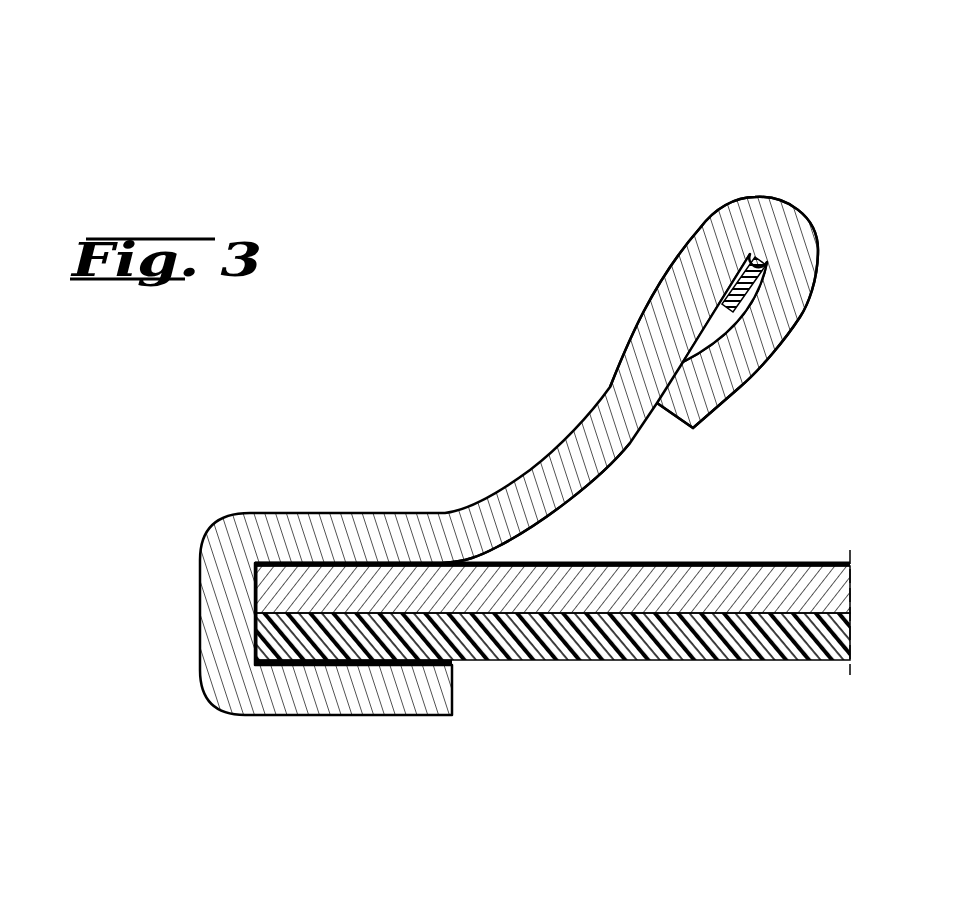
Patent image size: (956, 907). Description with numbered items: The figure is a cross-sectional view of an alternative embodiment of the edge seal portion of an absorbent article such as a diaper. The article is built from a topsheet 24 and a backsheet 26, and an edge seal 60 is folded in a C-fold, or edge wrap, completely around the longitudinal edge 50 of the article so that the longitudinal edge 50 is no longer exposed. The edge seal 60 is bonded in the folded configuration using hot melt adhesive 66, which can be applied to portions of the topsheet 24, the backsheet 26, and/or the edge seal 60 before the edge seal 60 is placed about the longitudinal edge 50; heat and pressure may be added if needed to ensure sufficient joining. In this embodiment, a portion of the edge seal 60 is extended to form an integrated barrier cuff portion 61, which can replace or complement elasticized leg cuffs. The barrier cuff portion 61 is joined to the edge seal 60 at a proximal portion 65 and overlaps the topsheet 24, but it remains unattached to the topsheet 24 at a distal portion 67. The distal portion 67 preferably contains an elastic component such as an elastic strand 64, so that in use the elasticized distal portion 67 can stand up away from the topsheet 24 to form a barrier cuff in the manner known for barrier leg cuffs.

The topsheet 24 is at (732, 585).
The backsheet 26 is at (590, 630).
The longitudinal edge 50 is at (253, 603).
The edge seal 60 is at (272, 530).
The barrier cuff portion 61 is at (693, 240).
The elastic strand 64 is at (750, 290).
The proximal portion 65 is at (454, 476).
The hot melt adhesive 66 is at (388, 563).
The distal portion 67 is at (798, 168).